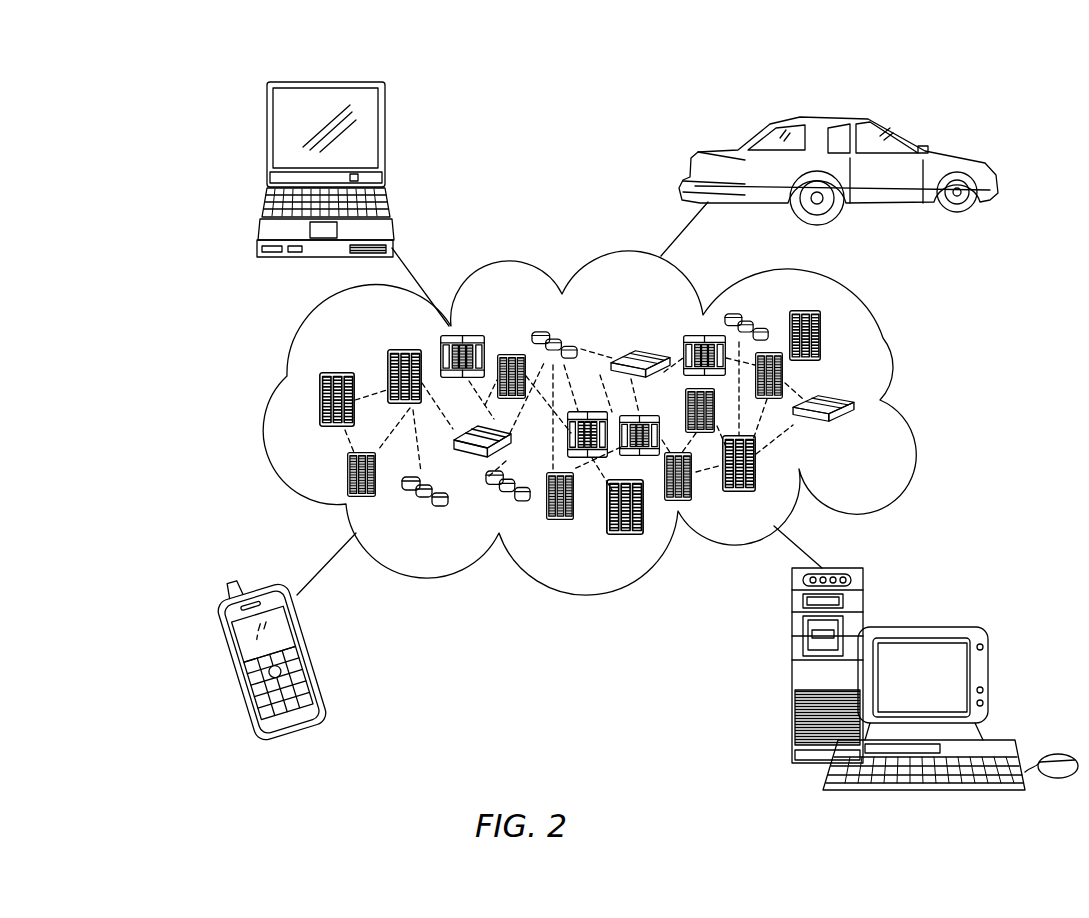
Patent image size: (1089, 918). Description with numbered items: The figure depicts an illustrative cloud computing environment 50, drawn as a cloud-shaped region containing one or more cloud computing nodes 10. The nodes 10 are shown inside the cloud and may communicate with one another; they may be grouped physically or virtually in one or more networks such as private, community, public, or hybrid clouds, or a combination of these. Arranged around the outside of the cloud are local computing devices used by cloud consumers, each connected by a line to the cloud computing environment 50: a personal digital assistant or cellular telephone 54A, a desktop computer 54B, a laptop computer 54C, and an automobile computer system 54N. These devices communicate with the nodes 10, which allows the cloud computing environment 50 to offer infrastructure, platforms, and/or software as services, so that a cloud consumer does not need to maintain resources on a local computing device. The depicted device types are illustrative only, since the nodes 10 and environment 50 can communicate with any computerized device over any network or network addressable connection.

The cloud computing nodes 10 is at (884, 460).
The cloud computing environment 50 is at (888, 343).
The personal digital assistant or cellular telephone 54A is at (230, 668).
The desktop computer 54B is at (937, 627).
The laptop computer 54C is at (290, 83).
The automobile computer system 54N is at (900, 130).